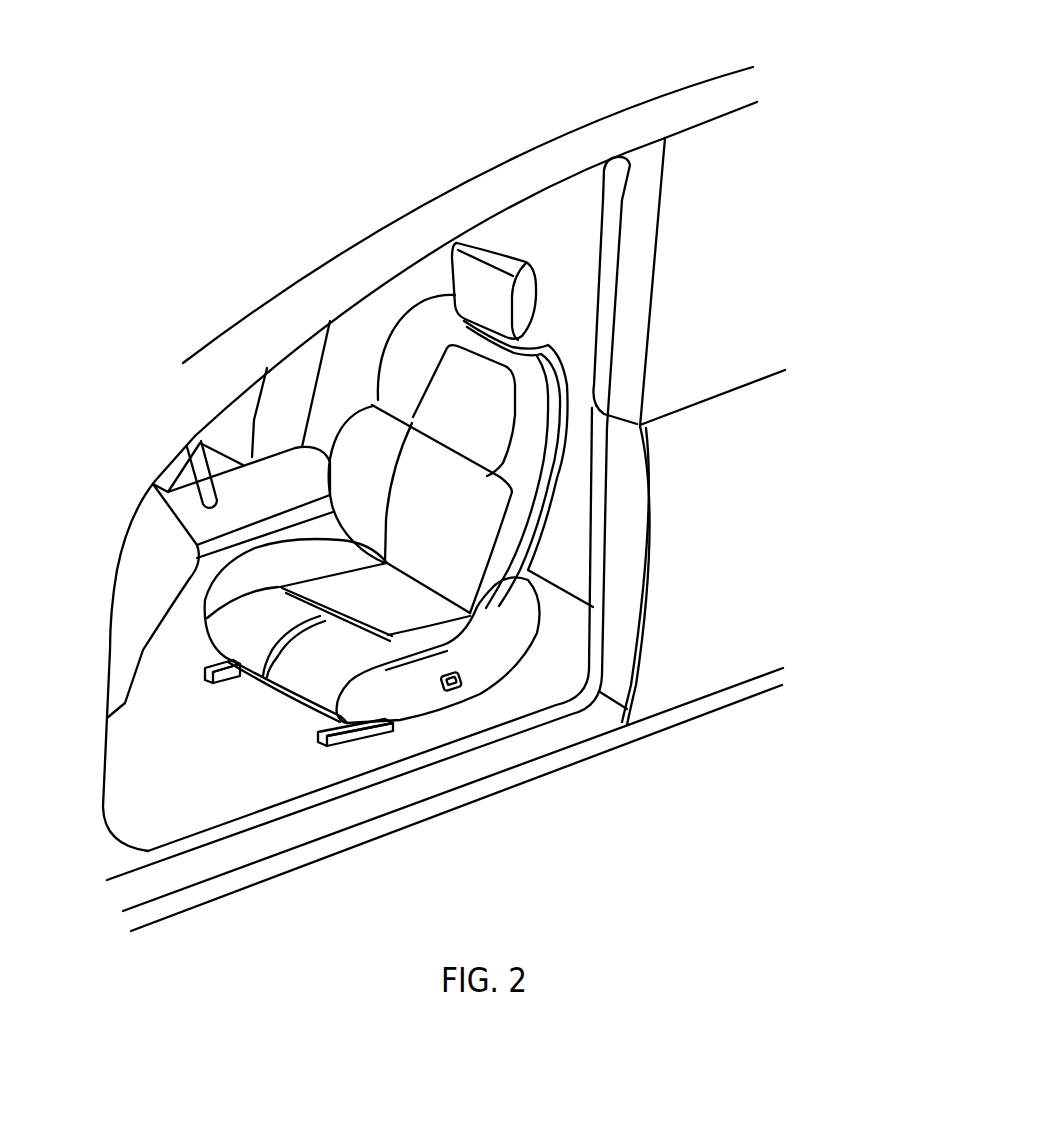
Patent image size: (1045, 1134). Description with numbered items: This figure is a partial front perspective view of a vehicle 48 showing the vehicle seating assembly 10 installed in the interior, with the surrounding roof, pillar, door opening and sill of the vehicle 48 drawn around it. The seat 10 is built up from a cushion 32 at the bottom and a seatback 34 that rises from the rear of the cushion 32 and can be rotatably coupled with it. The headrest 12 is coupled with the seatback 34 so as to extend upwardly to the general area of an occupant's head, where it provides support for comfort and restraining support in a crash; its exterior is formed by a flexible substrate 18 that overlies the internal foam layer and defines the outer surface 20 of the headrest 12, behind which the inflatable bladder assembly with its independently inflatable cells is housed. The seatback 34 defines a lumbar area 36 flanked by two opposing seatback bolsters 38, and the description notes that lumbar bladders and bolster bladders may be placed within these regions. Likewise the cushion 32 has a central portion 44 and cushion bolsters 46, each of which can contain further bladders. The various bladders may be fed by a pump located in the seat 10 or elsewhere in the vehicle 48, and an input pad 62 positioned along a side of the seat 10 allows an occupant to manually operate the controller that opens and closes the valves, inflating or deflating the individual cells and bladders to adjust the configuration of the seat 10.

The vehicle seating assembly 10 is at (457, 532).
The headrest 12 is at (506, 265).
The flexible substrate 18 is at (523, 303).
The outer surface 20 is at (480, 286).
The cushion 32 is at (429, 707).
The seatback 34 is at (516, 454).
The lumbar area 36 is at (418, 523).
The seatback bolsters 38 is at (343, 488).
The central portion 44 is at (365, 610).
The cushion bolsters 46 is at (253, 583).
The vehicle 48 is at (585, 114).
The input pad 62 is at (461, 687).